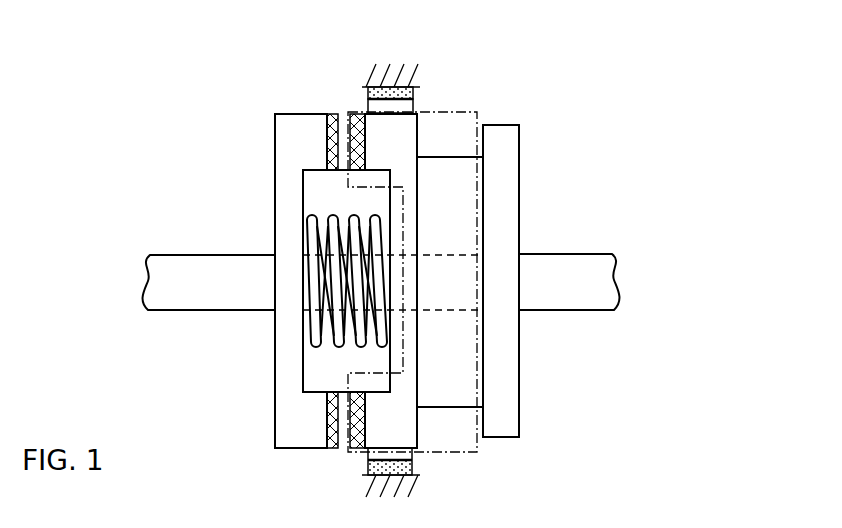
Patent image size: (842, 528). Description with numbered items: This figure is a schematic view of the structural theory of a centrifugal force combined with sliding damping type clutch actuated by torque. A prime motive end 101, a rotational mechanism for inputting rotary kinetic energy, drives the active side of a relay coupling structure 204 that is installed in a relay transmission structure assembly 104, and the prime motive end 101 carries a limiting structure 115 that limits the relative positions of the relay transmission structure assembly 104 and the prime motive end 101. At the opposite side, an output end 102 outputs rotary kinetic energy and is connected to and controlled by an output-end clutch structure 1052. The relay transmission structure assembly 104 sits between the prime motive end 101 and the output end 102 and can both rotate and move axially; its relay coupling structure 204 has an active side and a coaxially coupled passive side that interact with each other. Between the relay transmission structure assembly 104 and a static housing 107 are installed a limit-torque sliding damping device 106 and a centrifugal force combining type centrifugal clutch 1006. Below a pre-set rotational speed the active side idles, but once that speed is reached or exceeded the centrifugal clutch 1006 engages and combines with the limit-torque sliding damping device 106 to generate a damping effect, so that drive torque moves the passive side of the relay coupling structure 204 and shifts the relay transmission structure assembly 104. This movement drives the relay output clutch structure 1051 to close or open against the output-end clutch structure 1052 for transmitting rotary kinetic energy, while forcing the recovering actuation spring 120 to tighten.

The prime motive end 101 is at (573, 270).
The output end 102 is at (230, 292).
The relay transmission structure assembly 104 is at (458, 457).
The limit-torque sliding damping device 106 is at (370, 98).
The static housing 107 is at (388, 75).
The centrifugal force combining type centrifugal clutch 1006 is at (405, 106).
The relay coupling structure 204 is at (449, 178).
The limiting structure 115 is at (507, 192).
The recovering actuation spring 120 is at (328, 220).
The relay output clutch structure 1051 is at (362, 453).
The output-end clutch structure 1052 is at (327, 425).